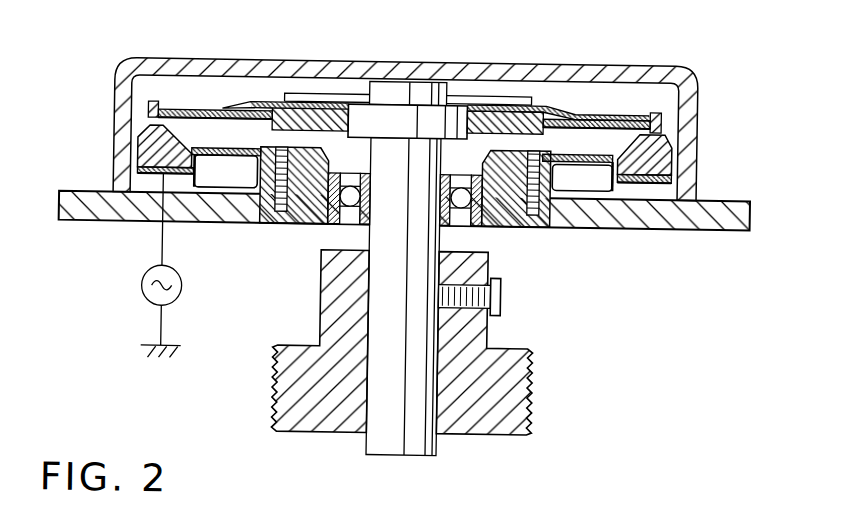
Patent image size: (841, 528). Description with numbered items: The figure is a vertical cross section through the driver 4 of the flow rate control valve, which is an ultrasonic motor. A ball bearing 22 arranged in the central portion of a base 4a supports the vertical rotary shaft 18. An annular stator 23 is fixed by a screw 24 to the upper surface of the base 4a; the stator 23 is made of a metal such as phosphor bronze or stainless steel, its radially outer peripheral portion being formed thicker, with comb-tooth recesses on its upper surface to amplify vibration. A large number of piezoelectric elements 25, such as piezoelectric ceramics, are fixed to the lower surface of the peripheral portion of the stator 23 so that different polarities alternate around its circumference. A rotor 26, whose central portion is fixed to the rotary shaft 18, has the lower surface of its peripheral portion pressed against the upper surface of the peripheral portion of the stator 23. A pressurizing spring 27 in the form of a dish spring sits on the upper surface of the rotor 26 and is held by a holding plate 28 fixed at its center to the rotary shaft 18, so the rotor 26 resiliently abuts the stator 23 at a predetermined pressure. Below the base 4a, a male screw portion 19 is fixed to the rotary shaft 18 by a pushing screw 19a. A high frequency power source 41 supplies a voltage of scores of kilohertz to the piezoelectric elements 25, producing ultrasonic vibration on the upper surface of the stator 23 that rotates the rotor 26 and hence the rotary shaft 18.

The driver 4 is at (643, 59).
The base 4a is at (616, 217).
The rotary shaft 18 is at (399, 447).
The male screw portion 19 is at (487, 424).
The pushing screw 19a is at (502, 309).
The ball bearing 22 is at (475, 235).
The annular stator 23 is at (684, 163).
The screw 24 is at (527, 228).
The piezoelectric element 25 is at (653, 183).
The rotor 26 is at (674, 113).
The pressurizing spring 27 is at (556, 108).
The holding plate 28 is at (491, 102).
The high frequency power source 41 is at (147, 281).